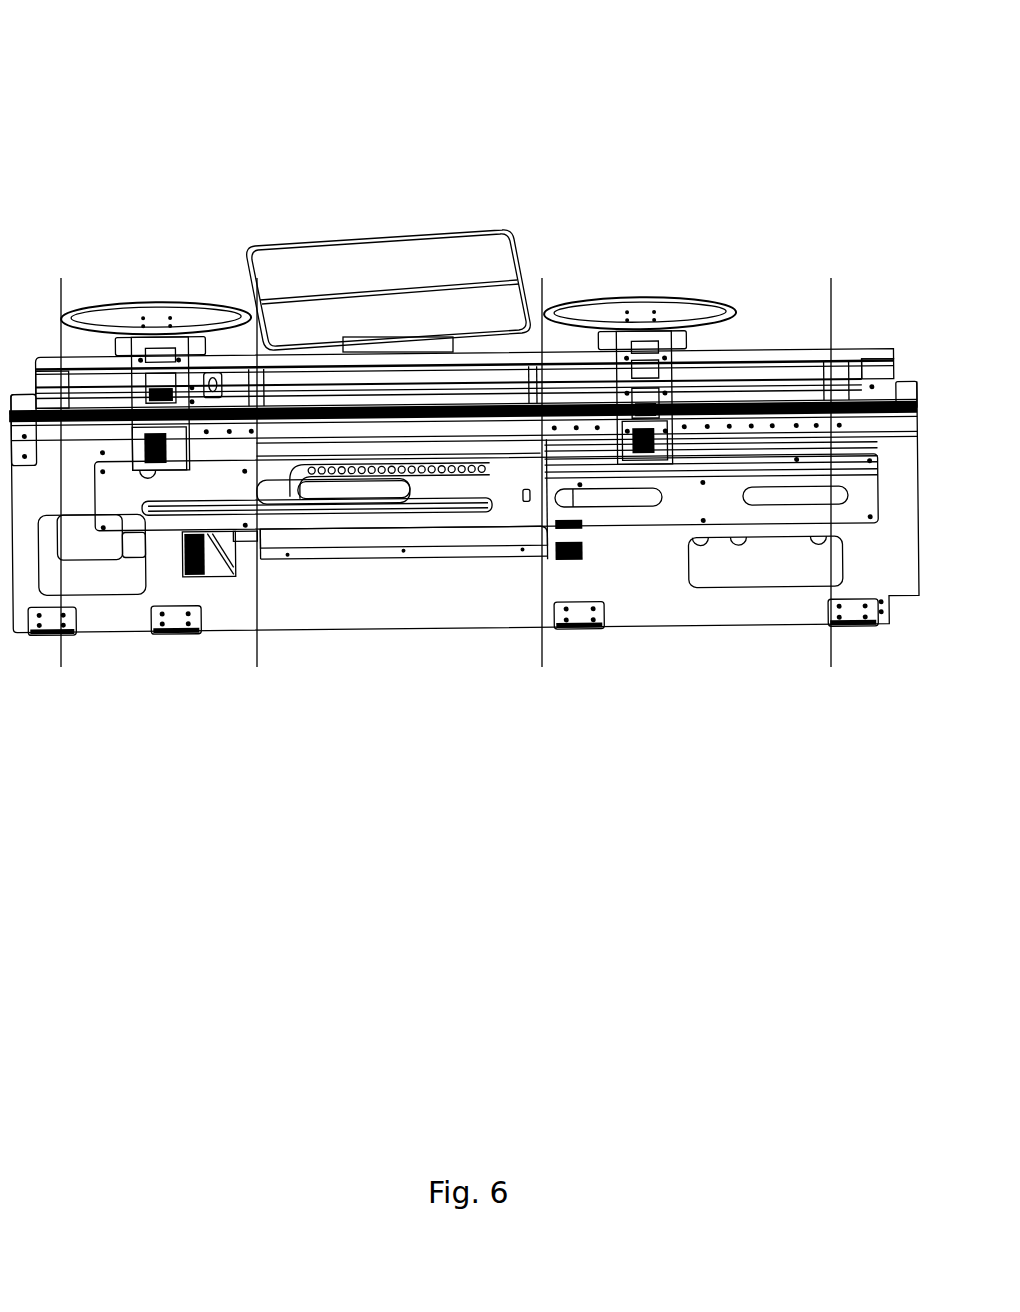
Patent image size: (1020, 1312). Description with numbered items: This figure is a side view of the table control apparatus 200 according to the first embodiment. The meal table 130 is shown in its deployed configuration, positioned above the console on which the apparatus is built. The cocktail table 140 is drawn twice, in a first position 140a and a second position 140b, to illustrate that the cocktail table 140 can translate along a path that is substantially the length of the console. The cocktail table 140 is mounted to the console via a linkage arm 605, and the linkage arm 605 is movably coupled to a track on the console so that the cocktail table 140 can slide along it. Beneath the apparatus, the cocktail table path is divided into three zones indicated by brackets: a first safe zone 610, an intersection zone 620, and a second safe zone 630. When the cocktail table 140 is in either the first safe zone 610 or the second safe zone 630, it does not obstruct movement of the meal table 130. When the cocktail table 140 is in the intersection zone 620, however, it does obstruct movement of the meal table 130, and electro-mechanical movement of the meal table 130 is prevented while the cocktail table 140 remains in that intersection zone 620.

The table control apparatus 200 is at (203, 118).
The meal table 130 is at (478, 256).
The cocktail table 140 is at (185, 315).
The first cocktail table position 140a is at (115, 318).
The second cocktail table position 140b is at (583, 313).
The linkage arm 605 is at (657, 367).
The first safe zone 610 is at (62, 678).
The intersection zone 620 is at (265, 678).
The second safe zone 630 is at (547, 678).